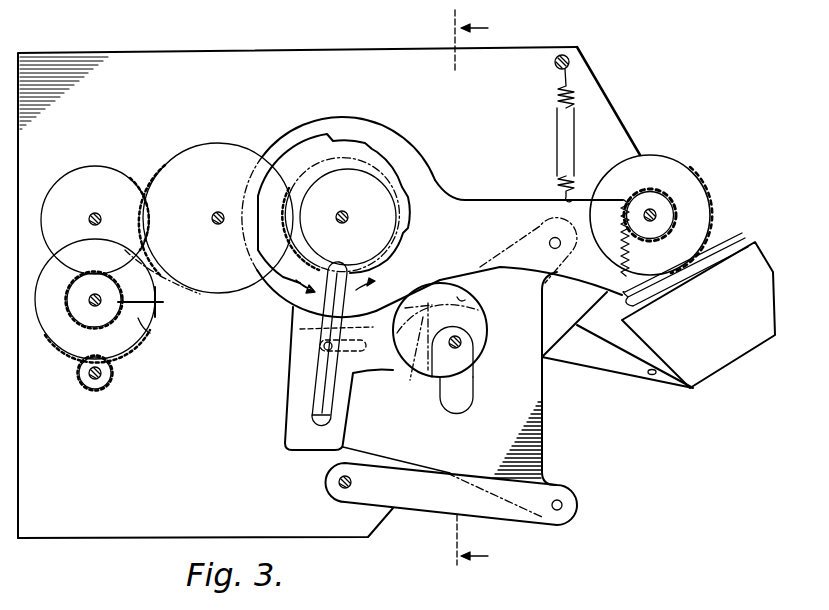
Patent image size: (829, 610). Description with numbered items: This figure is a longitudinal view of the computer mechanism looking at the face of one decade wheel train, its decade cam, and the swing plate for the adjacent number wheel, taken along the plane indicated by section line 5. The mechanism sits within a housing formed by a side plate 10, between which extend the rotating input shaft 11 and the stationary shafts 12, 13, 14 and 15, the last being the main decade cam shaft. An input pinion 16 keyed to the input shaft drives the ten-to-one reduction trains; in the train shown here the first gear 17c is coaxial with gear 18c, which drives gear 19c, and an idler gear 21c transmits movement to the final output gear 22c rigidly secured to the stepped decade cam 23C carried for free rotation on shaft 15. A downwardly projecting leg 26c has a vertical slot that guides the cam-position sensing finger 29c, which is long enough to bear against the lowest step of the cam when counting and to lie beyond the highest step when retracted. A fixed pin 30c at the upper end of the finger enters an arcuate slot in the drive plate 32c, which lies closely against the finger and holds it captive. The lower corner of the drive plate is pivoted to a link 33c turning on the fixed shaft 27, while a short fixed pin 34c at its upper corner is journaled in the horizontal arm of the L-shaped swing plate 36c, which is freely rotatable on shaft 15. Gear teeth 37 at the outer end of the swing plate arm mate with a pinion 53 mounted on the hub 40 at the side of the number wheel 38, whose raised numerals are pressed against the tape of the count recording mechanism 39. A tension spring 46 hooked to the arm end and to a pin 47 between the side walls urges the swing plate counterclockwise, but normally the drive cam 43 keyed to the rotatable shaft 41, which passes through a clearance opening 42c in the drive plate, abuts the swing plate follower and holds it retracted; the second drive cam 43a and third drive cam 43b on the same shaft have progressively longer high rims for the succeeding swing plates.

The section line 5- 5 is at (482, 291).
The side plate 10 is at (72, 520).
The input shaft 11 is at (104, 375).
The stationary shaft 12 is at (88, 302).
The stationary shaft 13 is at (97, 225).
The stationary shaft 14 is at (218, 226).
The main decade cam shaft 15 is at (353, 205).
The input pinion 16 is at (108, 383).
The first gear 17c is at (150, 331).
The gear wheel 18c is at (159, 283).
The gear wheel 19c is at (78, 180).
The idler gear 21c is at (160, 170).
The final output gear 22c is at (308, 175).
The stepped decade cam 23C is at (364, 143).
The leg 26c is at (295, 433).
The shaft 27 is at (336, 484).
The cam-position sensing finger 29c is at (320, 375).
The fixed pin 30c is at (322, 346).
The drive plate 32c is at (543, 436).
The link 33c is at (413, 504).
The fixed pin 34c is at (548, 243).
The swing plate 36c is at (426, 184).
The gear teeth 37 is at (628, 255).
The number wheel 38 is at (659, 151).
The count recording mechanism 39 is at (722, 229).
The pinion 40 is at (651, 208).
The shaft 41 is at (462, 343).
The clearance opening 42c is at (467, 408).
The drive cam 43 is at (397, 362).
The second drive cam 43a is at (420, 367).
The third drive cam 43b is at (464, 300).
The tension spring 46 is at (567, 120).
The pin 47 is at (571, 64).
The pinion 53 is at (673, 203).